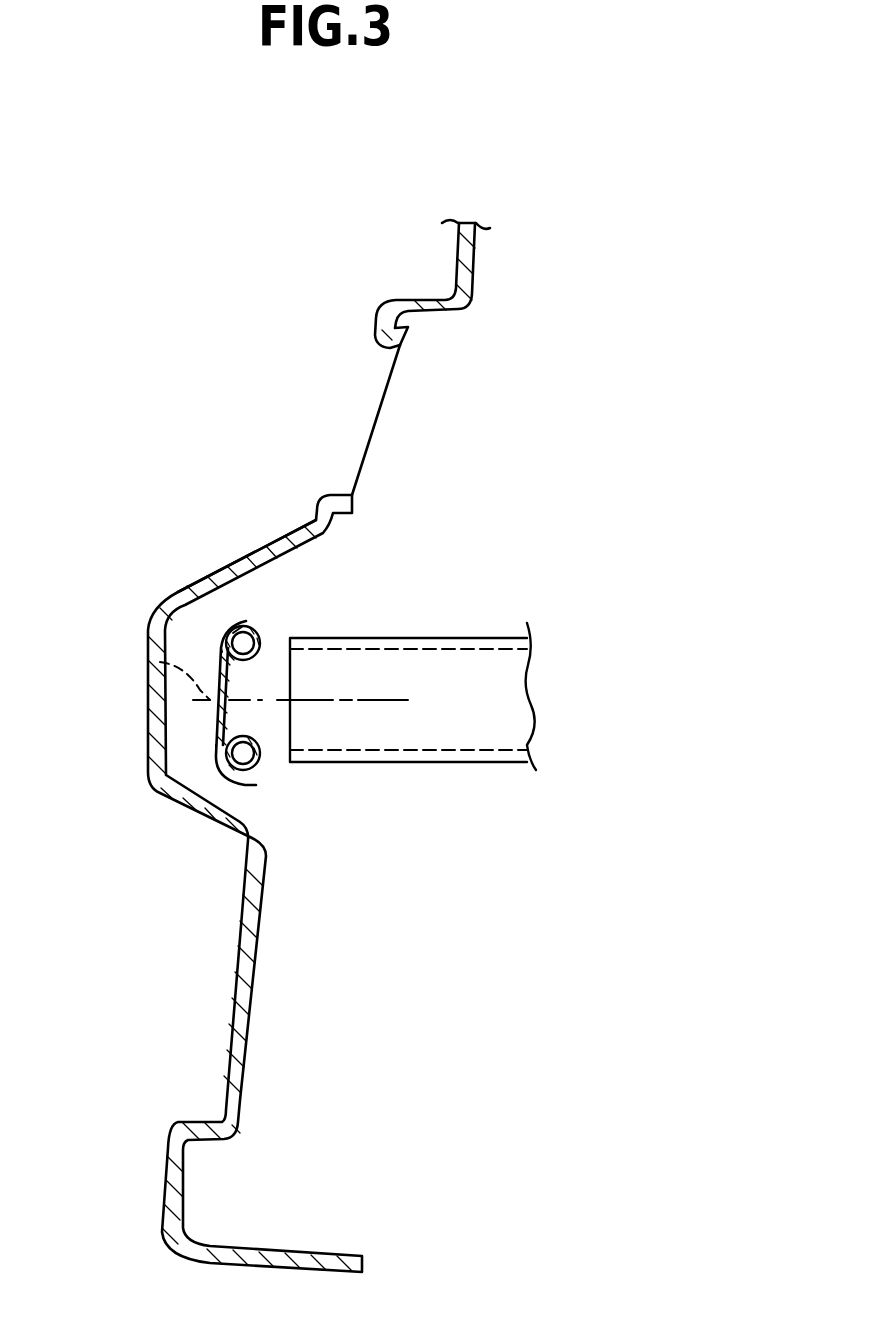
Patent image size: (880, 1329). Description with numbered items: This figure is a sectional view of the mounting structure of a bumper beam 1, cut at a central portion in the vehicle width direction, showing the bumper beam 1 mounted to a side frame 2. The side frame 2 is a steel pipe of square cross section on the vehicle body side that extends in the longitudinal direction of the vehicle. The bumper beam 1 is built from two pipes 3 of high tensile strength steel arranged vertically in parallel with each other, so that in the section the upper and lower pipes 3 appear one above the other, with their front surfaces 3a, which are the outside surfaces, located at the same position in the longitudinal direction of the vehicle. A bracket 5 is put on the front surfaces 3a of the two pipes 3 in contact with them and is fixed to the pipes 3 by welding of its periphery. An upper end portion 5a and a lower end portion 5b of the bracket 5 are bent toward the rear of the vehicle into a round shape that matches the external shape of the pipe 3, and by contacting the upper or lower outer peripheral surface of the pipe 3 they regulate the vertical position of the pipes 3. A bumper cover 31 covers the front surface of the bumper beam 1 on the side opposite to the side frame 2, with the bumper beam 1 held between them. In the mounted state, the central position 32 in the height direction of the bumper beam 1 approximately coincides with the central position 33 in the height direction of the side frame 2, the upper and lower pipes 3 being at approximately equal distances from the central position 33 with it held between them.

The bumper beam 1 is at (200, 743).
The side frame 2 is at (475, 665).
The pipe 3 is at (263, 640).
The front surface 3a is at (222, 650).
The bracket 5 is at (215, 728).
The upper end portion 5a is at (243, 623).
The lower end portion 5b is at (247, 788).
The bumper cover 31 is at (193, 597).
The central position 32 is at (160, 662).
The central position 33 is at (377, 698).